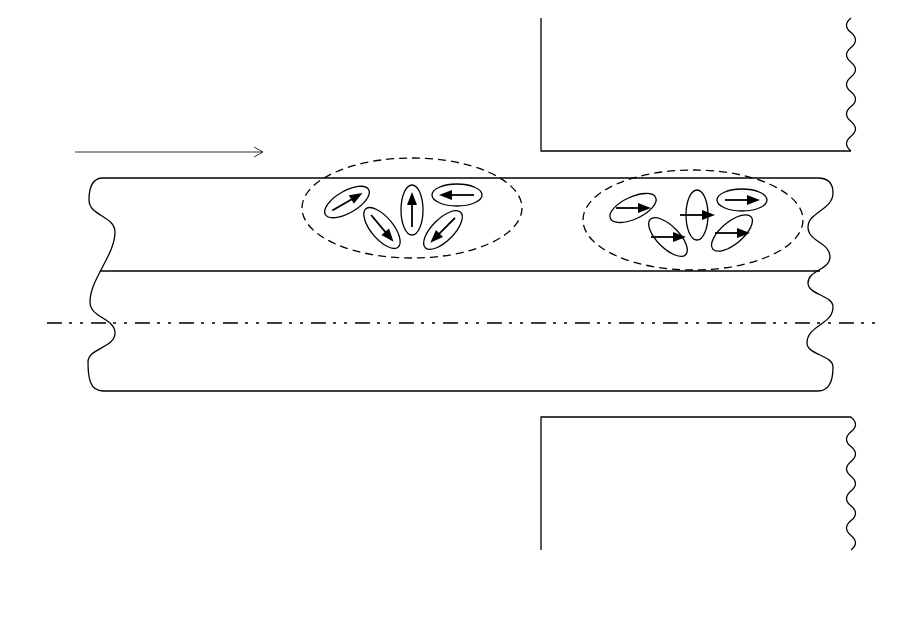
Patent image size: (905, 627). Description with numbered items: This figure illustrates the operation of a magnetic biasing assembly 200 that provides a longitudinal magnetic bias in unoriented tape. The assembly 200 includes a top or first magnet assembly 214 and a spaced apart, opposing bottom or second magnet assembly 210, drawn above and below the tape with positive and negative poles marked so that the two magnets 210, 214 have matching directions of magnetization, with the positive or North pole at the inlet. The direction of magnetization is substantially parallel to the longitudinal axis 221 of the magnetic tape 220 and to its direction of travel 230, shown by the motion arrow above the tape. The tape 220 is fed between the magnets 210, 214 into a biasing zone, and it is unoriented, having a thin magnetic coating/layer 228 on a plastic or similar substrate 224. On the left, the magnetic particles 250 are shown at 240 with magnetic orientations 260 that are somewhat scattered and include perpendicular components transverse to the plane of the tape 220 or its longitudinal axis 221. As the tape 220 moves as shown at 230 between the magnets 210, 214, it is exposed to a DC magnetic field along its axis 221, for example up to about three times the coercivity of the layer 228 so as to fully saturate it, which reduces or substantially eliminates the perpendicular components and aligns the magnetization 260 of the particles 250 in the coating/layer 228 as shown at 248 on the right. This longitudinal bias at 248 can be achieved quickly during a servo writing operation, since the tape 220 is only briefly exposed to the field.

The biasing assembly 200 is at (127, 97).
The bottom or second magnet assembly 210 is at (541, 498).
The top or first magnet assembly 214 is at (541, 85).
The magnetic tape 220 is at (74, 371).
The longitudinal axis 221 is at (62, 327).
The substrate 224 is at (435, 391).
The magnetic coating/layer 228 is at (101, 241).
The direction of travel 230 is at (115, 152).
The unoriented region 240 is at (331, 177).
The longitudinally biased region 248 is at (788, 182).
The magnetic particles 250 is at (435, 195).
The magnetic orientations 260 is at (418, 203).